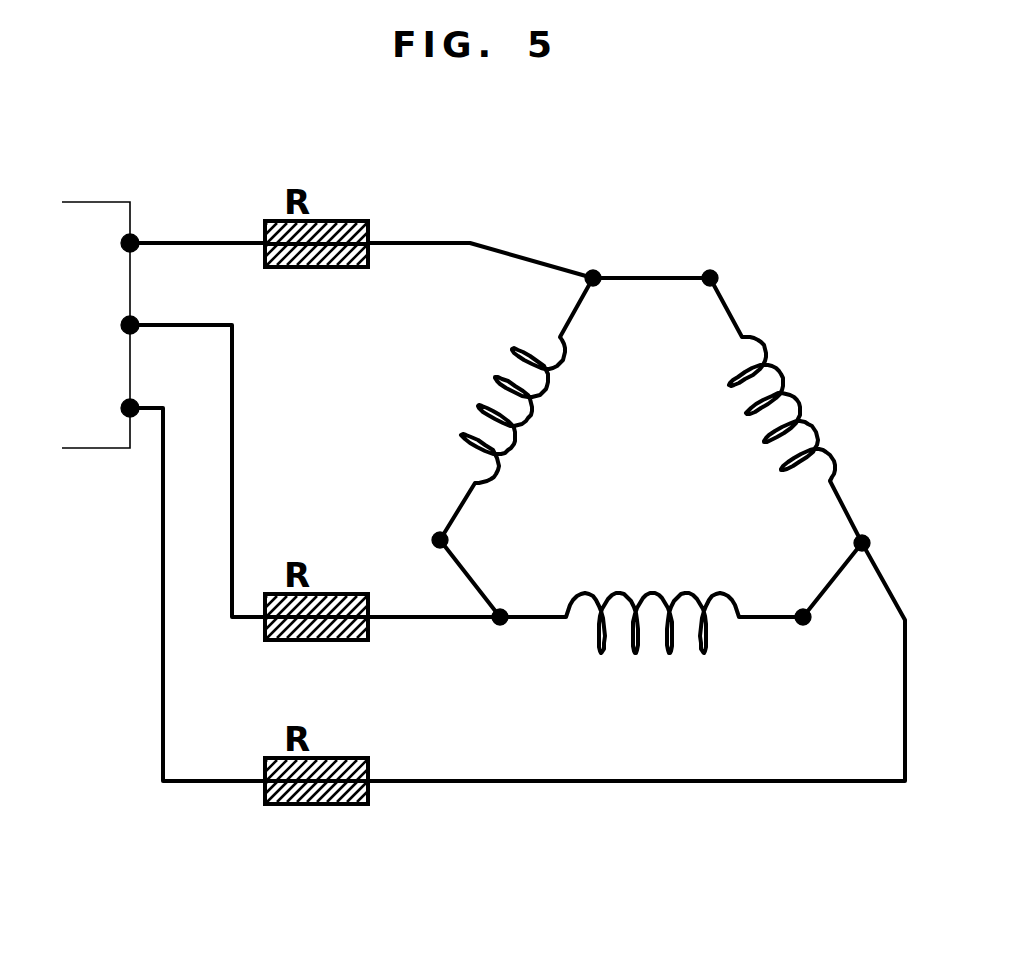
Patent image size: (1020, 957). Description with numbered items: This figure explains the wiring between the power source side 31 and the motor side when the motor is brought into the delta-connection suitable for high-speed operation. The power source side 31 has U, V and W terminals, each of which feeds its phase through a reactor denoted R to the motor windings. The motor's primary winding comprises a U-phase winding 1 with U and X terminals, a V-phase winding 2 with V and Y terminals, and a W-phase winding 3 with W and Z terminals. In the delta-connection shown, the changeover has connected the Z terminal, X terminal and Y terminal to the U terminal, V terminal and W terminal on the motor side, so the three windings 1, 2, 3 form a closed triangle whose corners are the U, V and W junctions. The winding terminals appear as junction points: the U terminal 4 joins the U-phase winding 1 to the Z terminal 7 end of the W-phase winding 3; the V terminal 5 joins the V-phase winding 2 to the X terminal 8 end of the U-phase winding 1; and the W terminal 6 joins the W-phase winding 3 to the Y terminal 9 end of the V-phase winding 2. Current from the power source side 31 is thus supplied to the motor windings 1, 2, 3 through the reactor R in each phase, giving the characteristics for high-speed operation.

The U-phase winding 1 is at (465, 412).
The V-phase winding 2 is at (660, 659).
The W-phase winding 3 is at (822, 414).
The terminal U 4 is at (603, 268).
The terminal V 5 is at (500, 634).
The terminal W 6 is at (867, 528).
The terminal Z 7 is at (713, 260).
The terminal X 8 is at (434, 526).
The terminal Y 9 is at (810, 636).
The power source side 31 is at (93, 448).